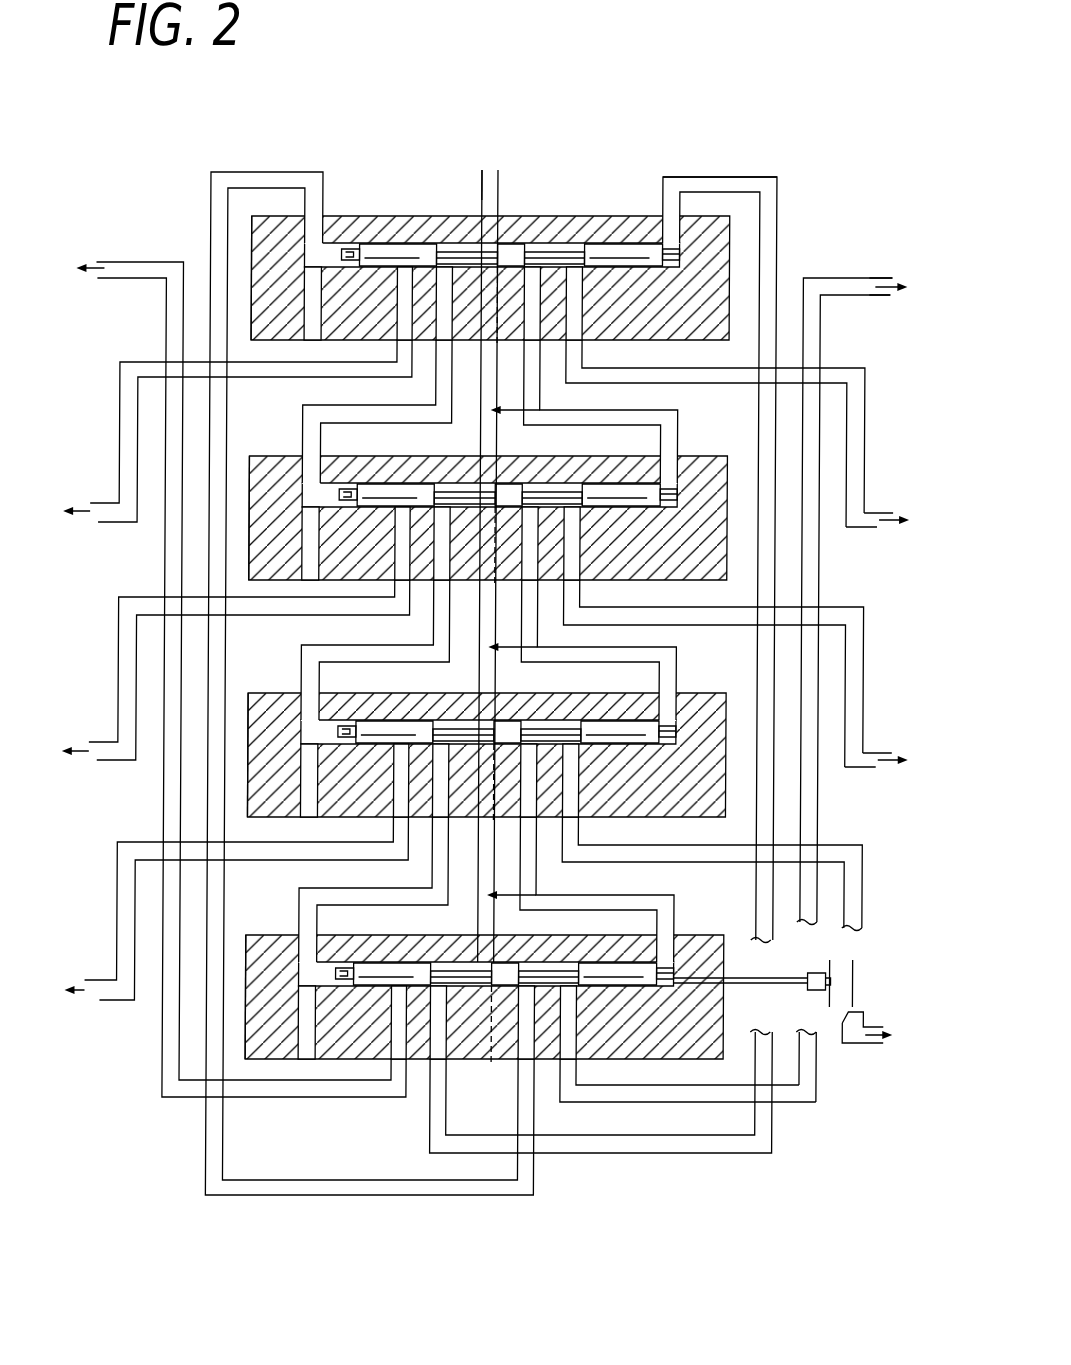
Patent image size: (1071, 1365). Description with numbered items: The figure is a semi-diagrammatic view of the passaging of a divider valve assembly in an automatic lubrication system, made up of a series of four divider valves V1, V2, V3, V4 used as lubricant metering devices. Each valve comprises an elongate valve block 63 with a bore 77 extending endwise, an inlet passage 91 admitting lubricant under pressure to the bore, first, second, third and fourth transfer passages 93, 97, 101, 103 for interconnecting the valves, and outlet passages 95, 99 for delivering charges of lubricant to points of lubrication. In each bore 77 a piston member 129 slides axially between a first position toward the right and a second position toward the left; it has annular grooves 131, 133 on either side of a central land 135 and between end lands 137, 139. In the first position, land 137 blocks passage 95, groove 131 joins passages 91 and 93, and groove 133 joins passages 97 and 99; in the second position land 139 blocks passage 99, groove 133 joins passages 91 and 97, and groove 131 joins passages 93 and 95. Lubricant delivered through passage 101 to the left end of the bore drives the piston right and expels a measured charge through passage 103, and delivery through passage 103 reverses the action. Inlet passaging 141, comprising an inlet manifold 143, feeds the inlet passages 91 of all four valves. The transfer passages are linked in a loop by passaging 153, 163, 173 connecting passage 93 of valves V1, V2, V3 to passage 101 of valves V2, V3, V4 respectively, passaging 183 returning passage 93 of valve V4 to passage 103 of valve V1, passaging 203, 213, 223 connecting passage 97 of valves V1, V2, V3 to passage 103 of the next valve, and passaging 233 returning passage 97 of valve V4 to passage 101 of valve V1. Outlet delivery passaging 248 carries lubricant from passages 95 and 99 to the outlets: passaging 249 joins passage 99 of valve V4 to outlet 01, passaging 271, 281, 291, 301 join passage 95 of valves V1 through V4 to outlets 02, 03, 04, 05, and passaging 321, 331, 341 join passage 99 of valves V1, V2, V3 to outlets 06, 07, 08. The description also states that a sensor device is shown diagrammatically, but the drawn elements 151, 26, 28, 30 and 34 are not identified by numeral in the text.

The valve block 63 is at (740, 262).
The bore 77 is at (316, 330).
The outlet passage 95 is at (405, 335).
The first transfer passage 93 is at (445, 343).
The second transfer passage 97 is at (532, 343).
The outlet passage 99 is at (576, 345).
The third transfer passage 101 is at (306, 235).
The fourth transfer passage 103 is at (676, 224).
The passaging 233 is at (246, 173).
The passaging 183 is at (778, 191).
The conduit section 151 is at (712, 163).
The outlet delivery passaging 248 is at (855, 268).
The passaging 249 is at (807, 1105).
The outlet 01 is at (855, 300).
The passaging 321 is at (847, 371).
The outlet 06 is at (885, 530).
The passaging 331 is at (847, 607).
The outlet 07 is at (885, 775).
The passaging 341 is at (840, 846).
The outlet 08 is at (866, 1047).
The actuator 26 is at (860, 985).
The actuator coupling 28 is at (832, 972).
The connector 30 is at (798, 985).
The actuator rod 34 is at (768, 978).
The passaging 301 is at (178, 262).
The outlet 05 is at (135, 282).
The passaging 271 is at (141, 366).
The outlet 02 is at (120, 528).
The passaging 281 is at (141, 601).
The outlet 03 is at (120, 768).
The passaging 291 is at (141, 846).
The outlet 04 is at (124, 1005).
The passaging 153 is at (343, 406).
The passaging 163 is at (351, 646).
The passaging 173 is at (328, 889).
The passaging 203 is at (665, 414).
The passaging 213 is at (665, 652).
The passaging 223 is at (663, 898).
The inlet manifold 143 is at (590, 405).
The piston member 129 is at (372, 247).
The end land 137 is at (400, 255).
The annular groove 131 is at (468, 252).
The central land 135 is at (512, 250).
The annular groove 133 is at (545, 255).
The end land 139 is at (620, 255).
The inlet passage 91 is at (495, 170).
The inlet passaging 141 is at (500, 183).
The divider valve V1 is at (253, 242).
The divider valve V2 is at (251, 487).
The divider valve V3 is at (249, 727).
The divider valve V4 is at (247, 969).